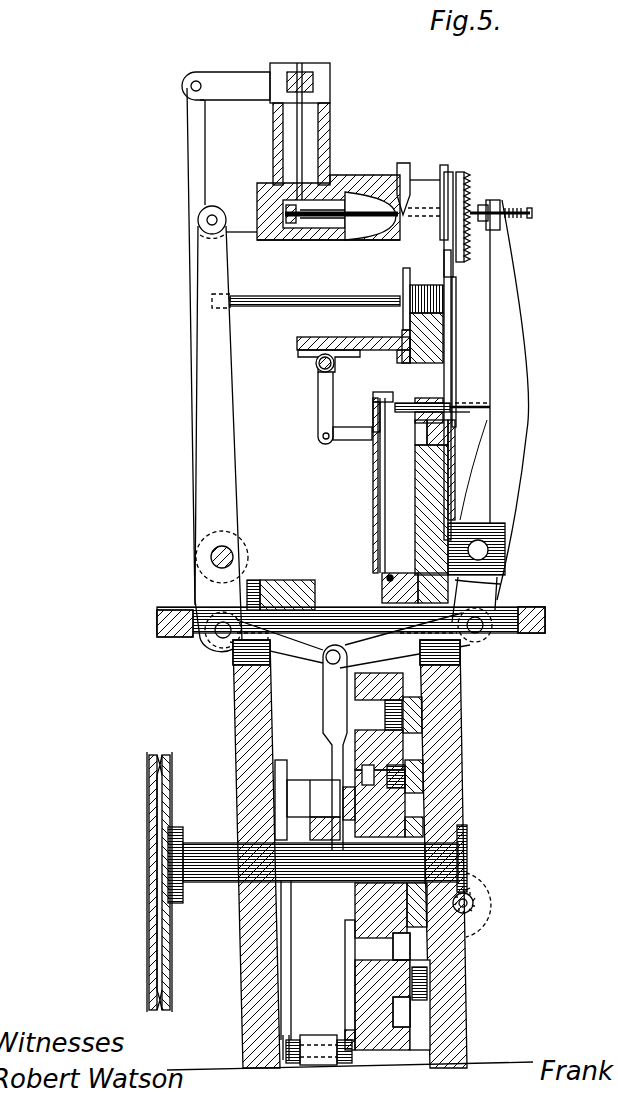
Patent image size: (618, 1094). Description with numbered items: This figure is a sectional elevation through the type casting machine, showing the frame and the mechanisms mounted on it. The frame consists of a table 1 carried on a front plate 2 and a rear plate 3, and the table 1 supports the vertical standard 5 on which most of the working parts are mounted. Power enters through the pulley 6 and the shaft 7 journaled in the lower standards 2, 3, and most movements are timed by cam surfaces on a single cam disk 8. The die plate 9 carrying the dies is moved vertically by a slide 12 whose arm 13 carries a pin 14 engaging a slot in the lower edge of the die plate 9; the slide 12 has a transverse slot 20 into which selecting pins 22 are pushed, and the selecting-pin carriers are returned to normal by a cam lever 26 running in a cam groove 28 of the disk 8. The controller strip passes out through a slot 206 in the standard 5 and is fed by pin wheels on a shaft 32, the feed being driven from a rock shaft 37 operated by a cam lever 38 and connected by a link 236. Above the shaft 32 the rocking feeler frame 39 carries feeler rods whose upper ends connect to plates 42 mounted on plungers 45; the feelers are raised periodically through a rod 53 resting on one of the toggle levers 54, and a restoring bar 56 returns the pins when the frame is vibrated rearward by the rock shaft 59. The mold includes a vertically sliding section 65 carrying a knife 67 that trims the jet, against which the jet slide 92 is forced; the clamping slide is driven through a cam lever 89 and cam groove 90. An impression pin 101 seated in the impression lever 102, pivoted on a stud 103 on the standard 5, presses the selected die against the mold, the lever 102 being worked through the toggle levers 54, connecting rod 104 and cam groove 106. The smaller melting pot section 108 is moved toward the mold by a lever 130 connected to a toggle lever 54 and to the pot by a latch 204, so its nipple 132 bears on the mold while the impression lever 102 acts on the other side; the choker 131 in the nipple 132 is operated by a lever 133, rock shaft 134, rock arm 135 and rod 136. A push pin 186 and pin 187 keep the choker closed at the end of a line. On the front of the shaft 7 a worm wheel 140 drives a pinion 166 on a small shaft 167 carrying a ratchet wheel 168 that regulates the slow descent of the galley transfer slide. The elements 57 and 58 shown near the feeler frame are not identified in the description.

The table 1 is at (546, 618).
The front plate 2 is at (462, 776).
The rear plate 3 is at (240, 778).
The vertical standard 5 is at (435, 497).
The pulley 6 is at (148, 805).
The shaft 7 is at (320, 862).
The cam disk 8 is at (383, 798).
The die plate 9 is at (470, 186).
The slide 12 is at (451, 391).
The arm 13 is at (455, 297).
The pin 14 is at (453, 265).
The transverse slot 20 is at (451, 410).
The selecting pins 22 is at (402, 402).
The cam lever 26 is at (417, 708).
The cam groove 28 is at (405, 1022).
The shaft 32 is at (393, 573).
The rock shaft 37 is at (320, 1061).
The cam lever 38 is at (350, 1002).
The rocking frame 39 is at (375, 521).
The plates 42 is at (372, 398).
The plungers 45 is at (372, 416).
The rod 53 is at (383, 613).
The toggle levers 54 is at (350, 640).
The restoring bar 56 is at (471, 406).
The plate 57 is at (350, 442).
The rod 58 is at (318, 411).
The rock shaft 59 is at (316, 366).
The vertically sliding mold section 65 is at (407, 262).
The knife 67 is at (411, 177).
The cam lever 89 is at (423, 792).
The cam groove 90 is at (457, 956).
The jet slide 92 is at (408, 178).
The impression pin 101 is at (518, 206).
The impression lever 102 is at (552, 394).
The stud 103 is at (506, 557).
The connecting rod 104 is at (330, 687).
The cam groove 106 is at (337, 730).
The smaller melting pot section 108 is at (330, 152).
The lever 130 is at (226, 280).
The choker 131 is at (351, 241).
The nipple 132 is at (363, 231).
The lever 133 is at (297, 146).
The rock shaft 134 is at (313, 81).
The rock arm 135 is at (226, 86).
The rod 136 is at (190, 178).
The worm wheel 140 is at (467, 833).
The pinion 166 is at (473, 892).
The small shaft 167 is at (473, 903).
The ratchet wheel 168 is at (494, 913).
The push pin or slide 186 is at (300, 307).
The pin 187 is at (394, 309).
The latch 204 is at (310, 207).
The slot 206 is at (450, 584).
The link 236 is at (288, 944).